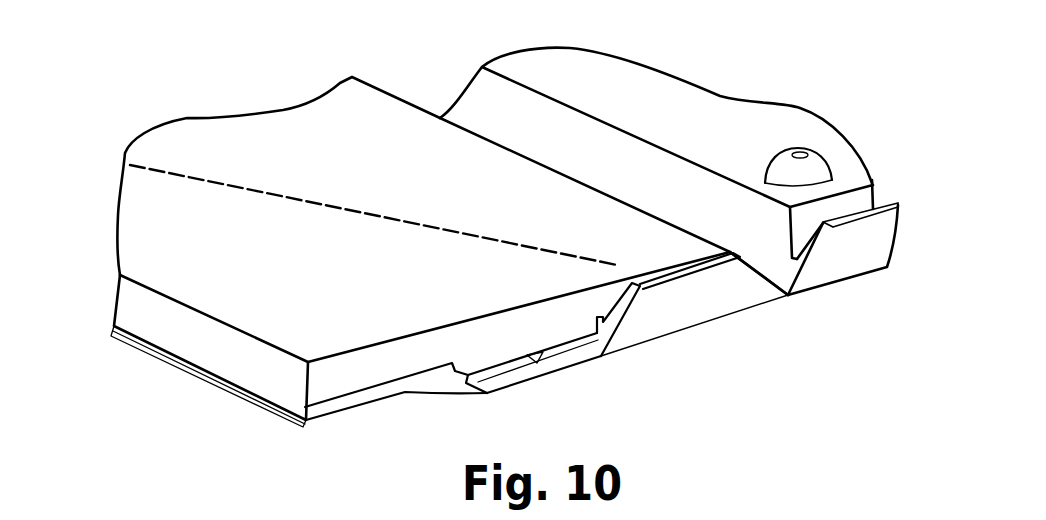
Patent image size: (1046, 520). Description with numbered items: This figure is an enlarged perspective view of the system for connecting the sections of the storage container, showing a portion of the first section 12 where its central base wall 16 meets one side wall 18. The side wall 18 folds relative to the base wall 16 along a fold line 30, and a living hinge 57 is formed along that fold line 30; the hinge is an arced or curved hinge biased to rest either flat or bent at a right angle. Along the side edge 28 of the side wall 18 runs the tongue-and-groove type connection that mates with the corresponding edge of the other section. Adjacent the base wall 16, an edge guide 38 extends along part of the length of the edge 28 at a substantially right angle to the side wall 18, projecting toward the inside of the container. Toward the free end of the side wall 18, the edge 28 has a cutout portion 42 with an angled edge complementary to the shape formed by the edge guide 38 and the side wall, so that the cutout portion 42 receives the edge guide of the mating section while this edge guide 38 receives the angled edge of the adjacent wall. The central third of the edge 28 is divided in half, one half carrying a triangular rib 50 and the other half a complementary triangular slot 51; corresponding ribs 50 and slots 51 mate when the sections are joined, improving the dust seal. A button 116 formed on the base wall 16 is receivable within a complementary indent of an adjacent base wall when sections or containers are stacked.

The first section 12 is at (692, 312).
The central base wall 16 is at (727, 117).
The button 116 is at (818, 173).
The side wall 18 is at (372, 304).
The side edge 28 is at (490, 330).
The fold line 30 is at (788, 294).
The edge guide 38 is at (858, 268).
The cutout portion 42 is at (411, 397).
The triangular rib 50 is at (567, 350).
The triangular slot 51 is at (505, 370).
The living hinge 57 is at (789, 297).